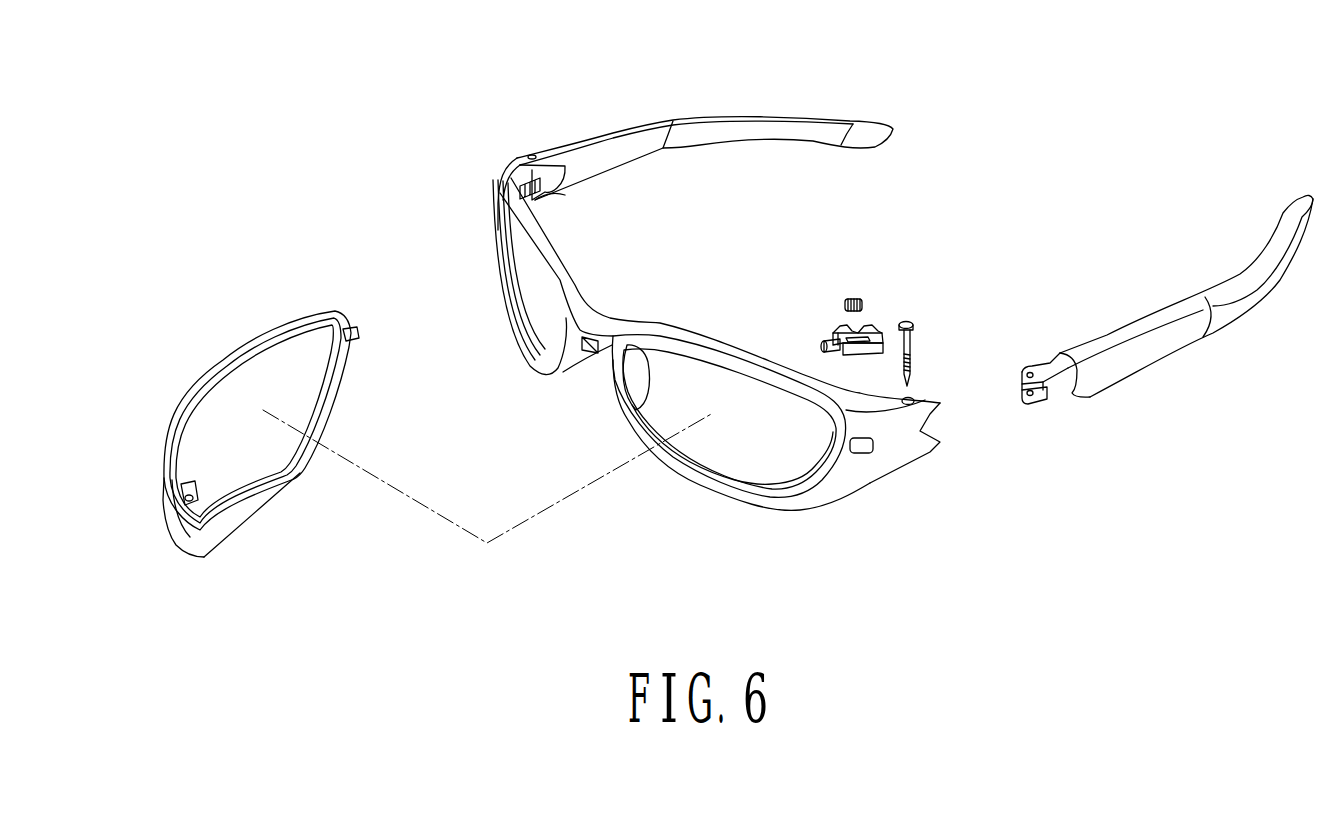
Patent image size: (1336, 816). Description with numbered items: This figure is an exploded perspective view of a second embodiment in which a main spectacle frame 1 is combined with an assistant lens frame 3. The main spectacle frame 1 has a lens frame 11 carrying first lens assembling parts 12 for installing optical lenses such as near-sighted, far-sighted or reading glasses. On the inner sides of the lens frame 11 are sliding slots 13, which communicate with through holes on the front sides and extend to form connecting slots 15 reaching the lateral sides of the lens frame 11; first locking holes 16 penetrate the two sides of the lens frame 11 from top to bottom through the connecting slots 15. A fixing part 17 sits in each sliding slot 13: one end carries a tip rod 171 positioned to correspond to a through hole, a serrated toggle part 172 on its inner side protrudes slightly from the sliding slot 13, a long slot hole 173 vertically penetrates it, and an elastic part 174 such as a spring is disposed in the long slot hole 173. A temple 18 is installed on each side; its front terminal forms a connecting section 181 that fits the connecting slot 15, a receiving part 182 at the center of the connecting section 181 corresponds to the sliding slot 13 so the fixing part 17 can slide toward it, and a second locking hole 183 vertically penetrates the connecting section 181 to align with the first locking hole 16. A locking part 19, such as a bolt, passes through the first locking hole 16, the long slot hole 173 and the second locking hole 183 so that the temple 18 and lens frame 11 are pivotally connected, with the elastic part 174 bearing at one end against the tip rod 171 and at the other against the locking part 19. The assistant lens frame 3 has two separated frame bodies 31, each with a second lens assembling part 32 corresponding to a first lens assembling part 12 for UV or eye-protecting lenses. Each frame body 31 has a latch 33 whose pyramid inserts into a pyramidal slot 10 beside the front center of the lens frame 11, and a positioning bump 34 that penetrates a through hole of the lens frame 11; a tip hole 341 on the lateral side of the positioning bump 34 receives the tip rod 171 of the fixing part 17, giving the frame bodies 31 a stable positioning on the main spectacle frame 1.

The main spectacle frame 1 is at (741, 110).
The assistant lens frame 3 is at (245, 441).
The pyramidal slot 10 is at (683, 315).
The lens frame 11 is at (562, 275).
The first lens assembling part 12 is at (753, 483).
The sliding slot 13 is at (528, 190).
The connecting slot 15 is at (548, 192).
The first locking hole 16 is at (912, 396).
The fixing part 17 is at (838, 266).
The tip rod 171 is at (823, 342).
The serrated toggle part 172 is at (837, 333).
The long slot hole 173 is at (862, 333).
The elastic part 174 is at (852, 296).
The temple 18 is at (1150, 358).
The connecting section 181 is at (1043, 368).
The receiving part 182 is at (1043, 398).
The second locking hole 183 is at (1022, 394).
The locking part 19 is at (912, 348).
The frame body 31 is at (277, 340).
The second lens assembling part 32 is at (256, 473).
The latch 33 is at (357, 335).
The positioning bump 34 is at (160, 532).
The tip hole 341 is at (205, 507).